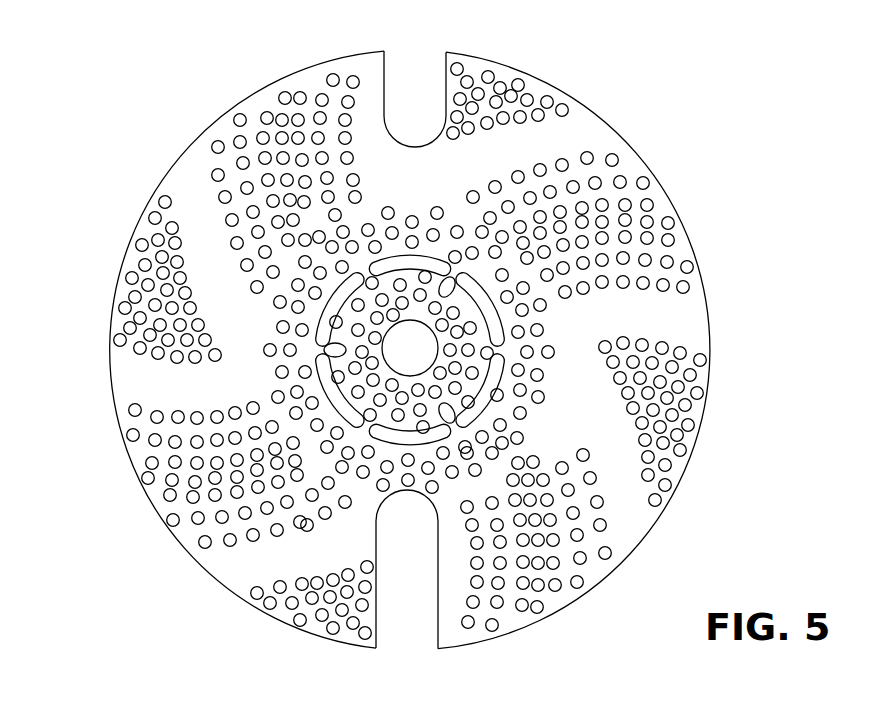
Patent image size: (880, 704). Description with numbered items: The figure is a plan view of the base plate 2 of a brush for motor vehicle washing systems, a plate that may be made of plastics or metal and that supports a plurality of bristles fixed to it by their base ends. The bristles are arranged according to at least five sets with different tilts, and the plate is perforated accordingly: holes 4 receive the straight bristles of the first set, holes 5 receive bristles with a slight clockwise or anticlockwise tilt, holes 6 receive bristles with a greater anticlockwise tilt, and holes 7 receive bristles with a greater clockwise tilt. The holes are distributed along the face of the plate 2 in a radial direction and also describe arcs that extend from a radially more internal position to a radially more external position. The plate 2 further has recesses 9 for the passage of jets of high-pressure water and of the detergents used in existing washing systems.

The base plate 2 is at (722, 323).
The holes 4 is at (280, 115).
The holes 5 is at (413, 220).
The holes 6 is at (216, 172).
The holes 7 is at (349, 100).
The recesses 9 is at (417, 112).